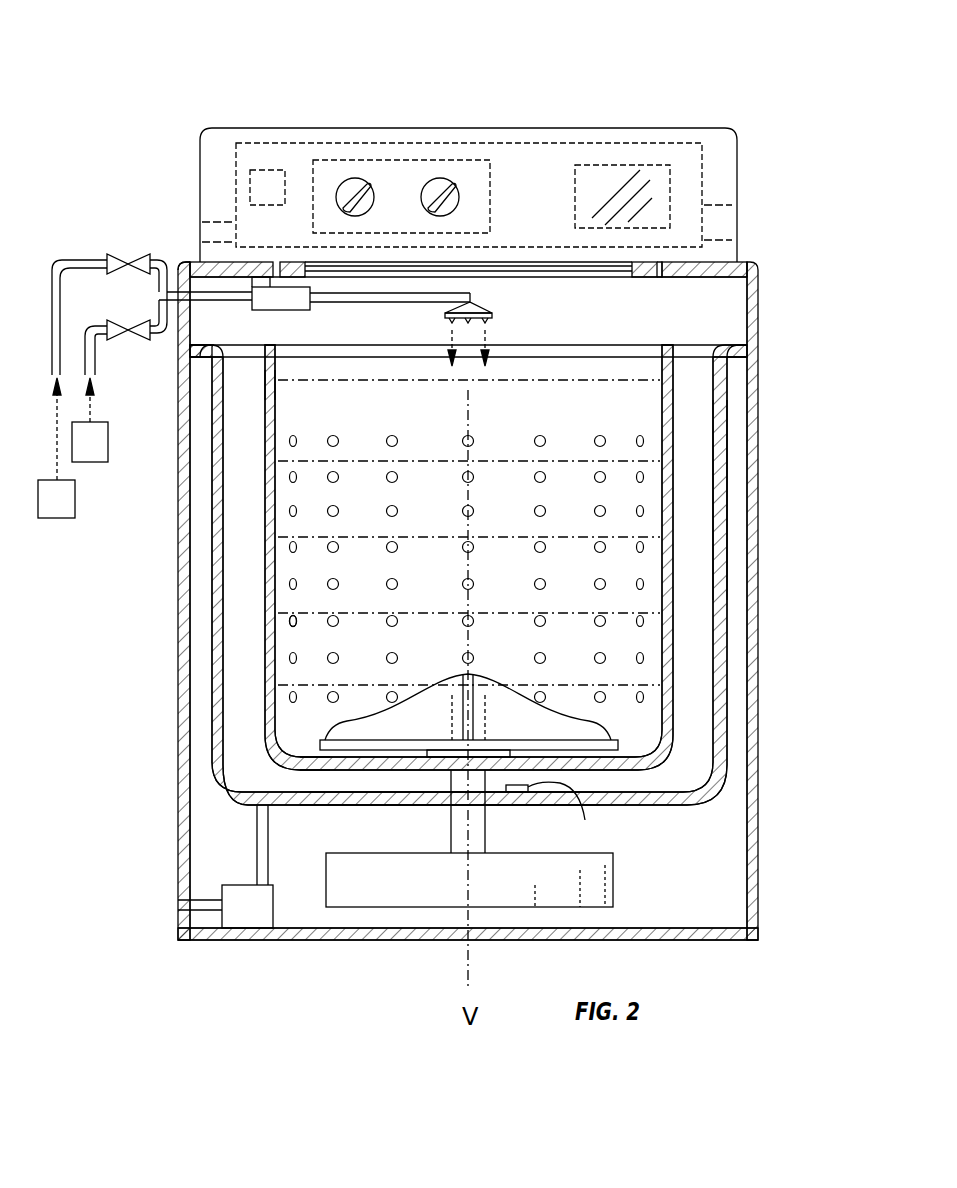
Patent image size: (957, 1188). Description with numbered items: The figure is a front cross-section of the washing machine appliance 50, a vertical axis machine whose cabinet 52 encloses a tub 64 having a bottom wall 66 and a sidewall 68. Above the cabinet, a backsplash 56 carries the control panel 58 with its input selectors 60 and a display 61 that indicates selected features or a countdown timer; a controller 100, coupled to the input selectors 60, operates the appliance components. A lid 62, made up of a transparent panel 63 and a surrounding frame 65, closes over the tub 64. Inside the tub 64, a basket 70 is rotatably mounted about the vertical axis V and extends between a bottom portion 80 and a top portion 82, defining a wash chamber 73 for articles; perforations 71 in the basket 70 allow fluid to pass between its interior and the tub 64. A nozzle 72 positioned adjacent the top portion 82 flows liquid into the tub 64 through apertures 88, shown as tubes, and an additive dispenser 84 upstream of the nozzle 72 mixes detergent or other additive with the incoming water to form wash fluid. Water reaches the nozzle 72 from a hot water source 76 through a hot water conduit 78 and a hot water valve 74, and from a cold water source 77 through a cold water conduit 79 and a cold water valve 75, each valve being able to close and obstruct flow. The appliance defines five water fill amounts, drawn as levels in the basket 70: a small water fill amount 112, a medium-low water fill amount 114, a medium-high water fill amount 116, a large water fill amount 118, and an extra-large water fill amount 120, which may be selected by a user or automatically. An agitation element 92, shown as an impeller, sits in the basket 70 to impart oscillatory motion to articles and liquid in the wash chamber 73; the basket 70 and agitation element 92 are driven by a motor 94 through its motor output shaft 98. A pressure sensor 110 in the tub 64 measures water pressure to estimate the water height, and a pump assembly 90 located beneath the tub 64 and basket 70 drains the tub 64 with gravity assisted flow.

The washing machine appliance 50 is at (185, 55).
The cabinet 52 is at (760, 866).
The backsplash 56 is at (543, 180).
The control panel 58 is at (400, 178).
The input selectors 60 is at (348, 178).
The display 61 is at (618, 182).
The lid 62 is at (634, 250).
The transparent panel 63 is at (610, 262).
The tub 64 is at (727, 615).
The frame 65 is at (648, 262).
The bottom wall 66 is at (673, 792).
The sidewall 68 is at (728, 491).
The basket 70 is at (720, 390).
The perforations 71 is at (326, 587).
The nozzle 72 is at (472, 297).
The wash chamber 73 is at (600, 394).
The hot water valve 74 is at (138, 256).
The cold water valve 75 is at (140, 322).
The hot water source 76 is at (56, 448).
The cold water source 77 is at (90, 420).
The hot water conduit 78 is at (52, 330).
The cold water conduit 79 is at (100, 350).
The bottom portion 80 is at (264, 757).
The top portion 82 is at (278, 386).
The additive dispenser 84 is at (309, 328).
The apertures 88 is at (444, 318).
The pump assembly 90 is at (248, 915).
The agitation element 92 is at (498, 688).
The motor 94 is at (387, 895).
The motor output shaft 98 is at (486, 820).
The controller 100 is at (270, 170).
The pressure sensor 110 is at (553, 815).
The small water fill amount 112 is at (648, 685).
The medium-low water fill amount 114 is at (300, 612).
The medium-high water fill amount 116 is at (648, 537).
The large water fill amount 118 is at (648, 460).
The extra-large water fill amount 120 is at (638, 380).